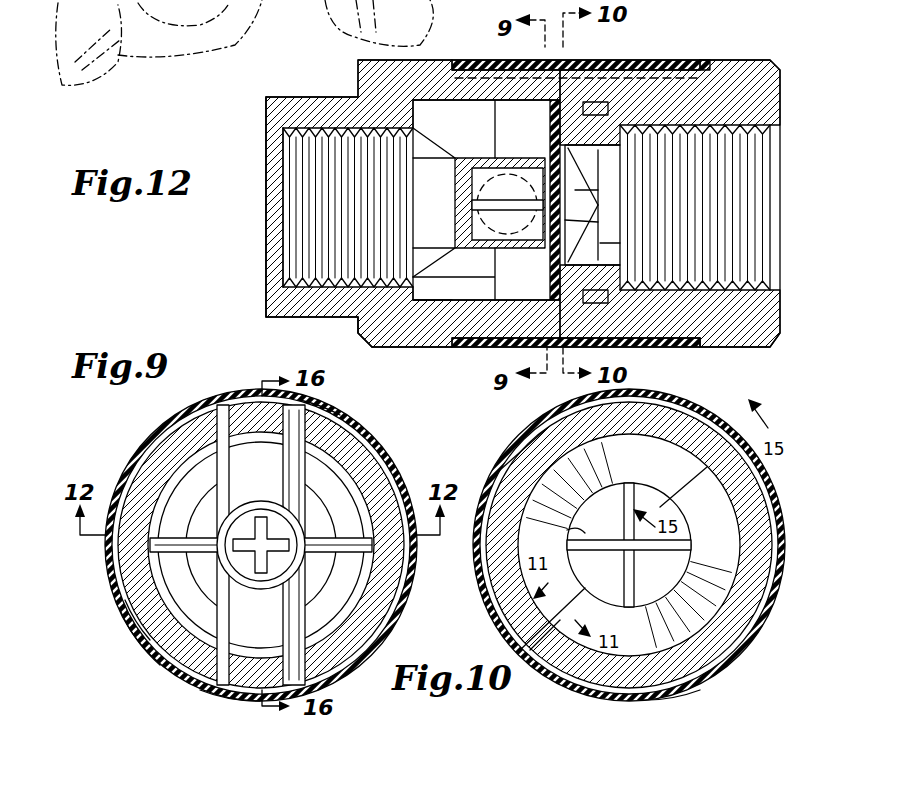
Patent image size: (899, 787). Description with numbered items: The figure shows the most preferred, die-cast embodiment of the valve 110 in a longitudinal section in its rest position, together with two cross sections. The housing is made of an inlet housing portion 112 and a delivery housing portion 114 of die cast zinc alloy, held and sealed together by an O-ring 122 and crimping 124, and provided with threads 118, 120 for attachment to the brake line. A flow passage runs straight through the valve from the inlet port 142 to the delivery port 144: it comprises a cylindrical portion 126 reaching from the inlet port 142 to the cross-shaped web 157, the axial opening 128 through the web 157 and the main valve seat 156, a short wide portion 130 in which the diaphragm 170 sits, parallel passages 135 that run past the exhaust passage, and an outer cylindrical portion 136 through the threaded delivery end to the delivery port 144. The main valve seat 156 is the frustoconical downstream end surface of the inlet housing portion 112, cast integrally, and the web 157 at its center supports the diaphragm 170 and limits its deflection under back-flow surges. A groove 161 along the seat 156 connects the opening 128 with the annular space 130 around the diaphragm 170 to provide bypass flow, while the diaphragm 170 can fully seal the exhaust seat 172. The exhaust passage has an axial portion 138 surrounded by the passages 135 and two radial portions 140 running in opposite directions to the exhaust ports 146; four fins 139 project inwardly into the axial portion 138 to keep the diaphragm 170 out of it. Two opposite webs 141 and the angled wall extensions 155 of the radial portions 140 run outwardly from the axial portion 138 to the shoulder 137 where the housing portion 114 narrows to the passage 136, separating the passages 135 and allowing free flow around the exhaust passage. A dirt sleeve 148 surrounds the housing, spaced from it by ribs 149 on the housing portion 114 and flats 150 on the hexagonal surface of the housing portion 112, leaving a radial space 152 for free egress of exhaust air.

In FIG. 12, the valve 110 is at (195, 241).
In FIG. 12, the inlet housing portion 112 is at (755, 70).
In FIG. 12, the delivery housing portion 114 is at (316, 106).
In FIG. 9, the delivery housing portion 114 is at (175, 450).
In FIG. 10, the delivery housing portion 114 is at (527, 440).
In FIG. 12, the threads 118 is at (712, 135).
In FIG. 12, the threads 120 is at (282, 147).
In FIG. 12, the O-ring 122 is at (607, 100).
In FIG. 12, the crimping 124 is at (697, 97).
In FIG. 12, the cylindrical portion of flow passage 126 is at (730, 203).
In FIG. 12, the axial opening 128 is at (602, 243).
In FIG. 10, the axial opening 128 is at (665, 580).
In FIG. 12, the short wide portion of flow passage 130 is at (590, 100).
In FIG. 12, the parallel passages 135 is at (358, 318).
In FIG. 9, the parallel passages 135 is at (322, 472).
In FIG. 12, the cylindrical portion of flow passage 136 is at (268, 282).
In FIG. 9, the cylindrical portion of flow passage 136 is at (137, 584).
In FIG. 12, the shoulder 137 is at (432, 302).
In FIG. 9, the shoulder 137 is at (312, 520).
In FIG. 12, the axial portion of exhaust passage 138 is at (548, 200).
In FIG. 9, the axial portion of exhaust passage 138 is at (170, 660).
In FIG. 12, the fins 139 is at (472, 206).
In FIG. 9, the fins 139 is at (170, 470).
In FIG. 12, the radial portions of exhaust passage 140 is at (508, 190).
In FIG. 9, the radial portions of exhaust passage 140 is at (312, 634).
In FIG. 12, the webs 141 is at (466, 136).
In FIG. 9, the webs 141 is at (400, 576).
In FIG. 12, the inlet port 142 is at (780, 272).
In FIG. 12, the delivery port 144 is at (266, 265).
In FIG. 9, the exhaust ports 146 is at (237, 700).
In FIG. 12, the dirt sleeve 148 is at (478, 62).
In FIG. 9, the dirt sleeve 148 is at (187, 412).
In FIG. 10, the dirt sleeve 148 is at (712, 402).
In FIG. 12, the ribs 149 is at (527, 63).
In FIG. 9, the ribs 149 is at (360, 425).
In FIG. 12, the flats 150 is at (712, 62).
In FIG. 12, the radial space 152 is at (637, 334).
In FIG. 9, the radial space 152 is at (142, 612).
In FIG. 10, the radial space 152 is at (677, 694).
In FIG. 12, the extensions of radial exhaust passage walls 155 is at (447, 191).
In FIG. 12, the main valve seat 156 is at (572, 147).
In FIG. 10, the main valve seat 156 is at (670, 470).
In FIG. 12, the cross-shaped web 157 is at (577, 190).
In FIG. 10, the cross-shaped web 157 is at (568, 531).
In FIG. 12, the bypass passage or groove 161 is at (577, 222).
In FIG. 10, the bypass passage or groove 161 is at (523, 636).
In FIG. 12, the diaphragm 170 is at (517, 300).
In FIG. 10, the exhaust seat 172 is at (530, 465).